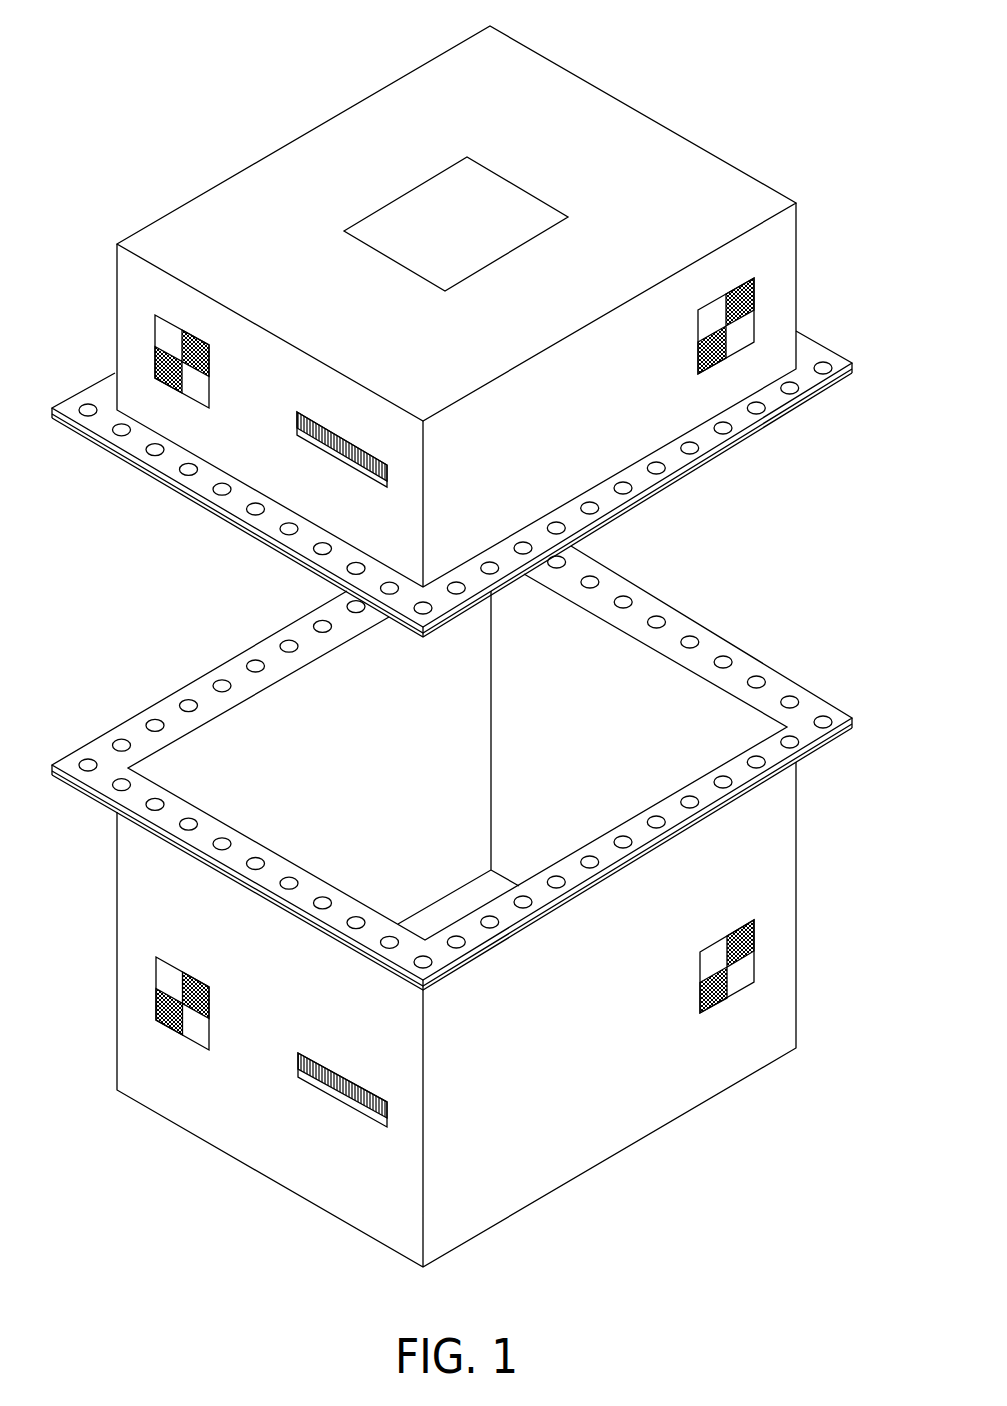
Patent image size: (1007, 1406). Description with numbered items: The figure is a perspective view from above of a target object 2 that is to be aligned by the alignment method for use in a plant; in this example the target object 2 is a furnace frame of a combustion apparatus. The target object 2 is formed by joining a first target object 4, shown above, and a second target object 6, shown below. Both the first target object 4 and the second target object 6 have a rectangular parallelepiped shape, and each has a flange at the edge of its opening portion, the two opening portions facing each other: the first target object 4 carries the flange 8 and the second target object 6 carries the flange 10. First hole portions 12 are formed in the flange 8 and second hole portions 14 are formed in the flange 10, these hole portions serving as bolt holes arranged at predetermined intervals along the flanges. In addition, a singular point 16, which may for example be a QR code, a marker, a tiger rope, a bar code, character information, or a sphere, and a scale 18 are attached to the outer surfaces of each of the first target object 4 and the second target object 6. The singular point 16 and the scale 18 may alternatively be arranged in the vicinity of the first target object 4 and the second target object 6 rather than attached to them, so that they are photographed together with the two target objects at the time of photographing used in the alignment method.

The target object 2 is at (739, 48).
The first target object 4 is at (216, 157).
The second target object 6 is at (632, 1208).
The flange 8 is at (127, 442).
The flange 10 is at (235, 665).
The first hole portions 12 is at (732, 422).
The second hole portions 14 is at (762, 673).
The singular point 16 is at (167, 320).
The scale 18 is at (332, 455).